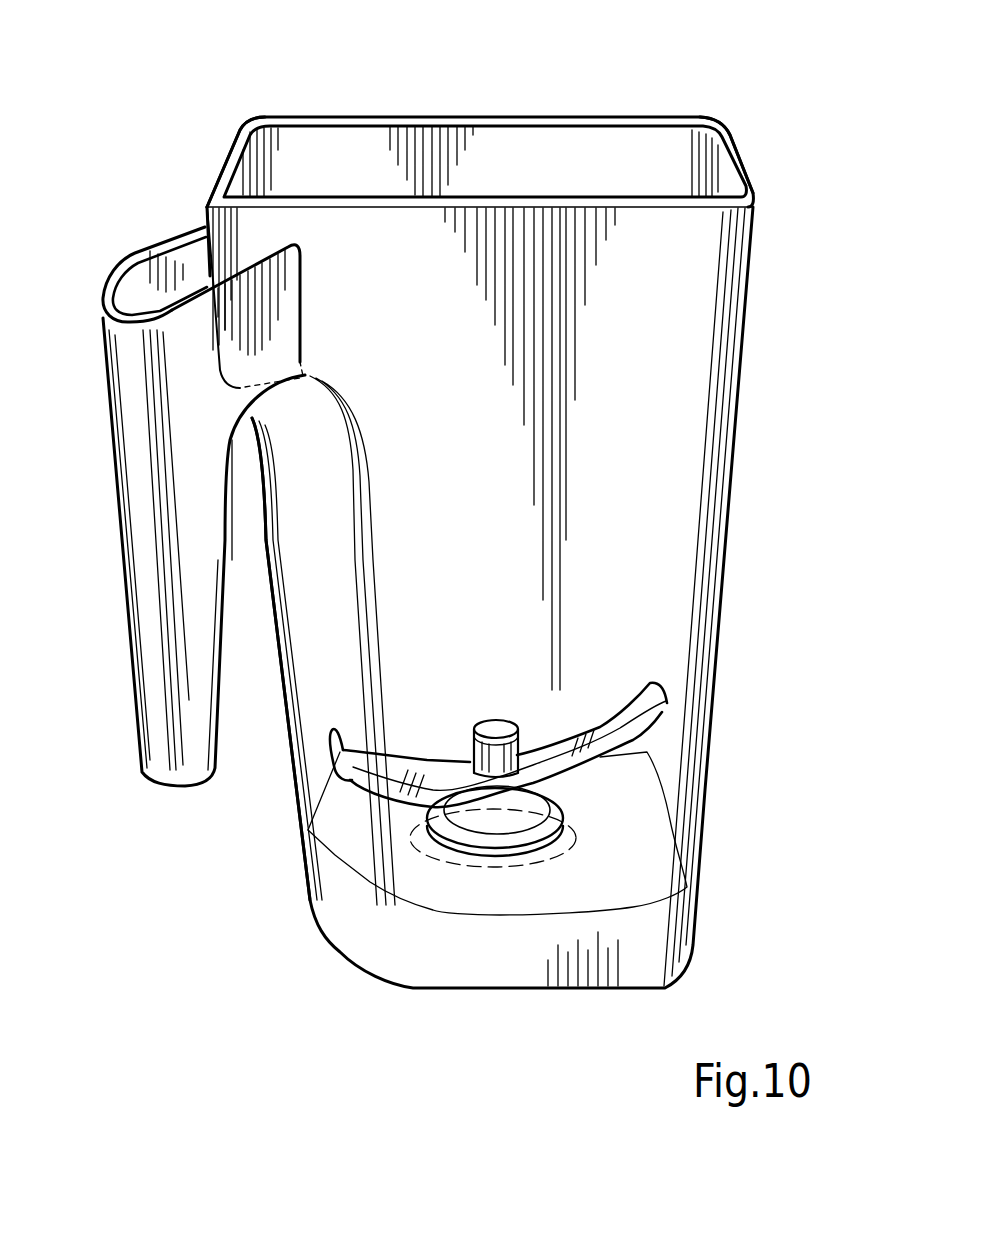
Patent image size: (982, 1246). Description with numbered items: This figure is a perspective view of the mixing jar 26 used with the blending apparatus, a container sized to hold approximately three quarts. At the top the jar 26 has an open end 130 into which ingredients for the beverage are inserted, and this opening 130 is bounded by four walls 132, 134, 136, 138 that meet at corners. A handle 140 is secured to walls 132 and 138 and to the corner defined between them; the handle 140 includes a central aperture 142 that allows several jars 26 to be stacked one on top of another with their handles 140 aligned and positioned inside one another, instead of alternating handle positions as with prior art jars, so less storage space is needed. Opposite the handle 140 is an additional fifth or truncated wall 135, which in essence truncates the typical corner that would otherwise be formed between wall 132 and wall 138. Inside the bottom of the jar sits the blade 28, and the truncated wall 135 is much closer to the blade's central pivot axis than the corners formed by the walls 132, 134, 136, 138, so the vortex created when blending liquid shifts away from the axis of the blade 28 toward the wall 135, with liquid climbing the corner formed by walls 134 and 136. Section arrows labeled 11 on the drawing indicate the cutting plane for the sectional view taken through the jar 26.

The jar 26 is at (636, 110).
The blade 28 is at (602, 720).
The open end 130 is at (525, 150).
The wall 132 is at (421, 287).
The wall 134 is at (728, 177).
The truncated wall 135 is at (337, 637).
The wall 136 is at (366, 177).
The wall 138 is at (238, 175).
The handle 140 is at (190, 567).
The central aperture 142 is at (147, 290).
The section line 11- 11 is at (313, 667).